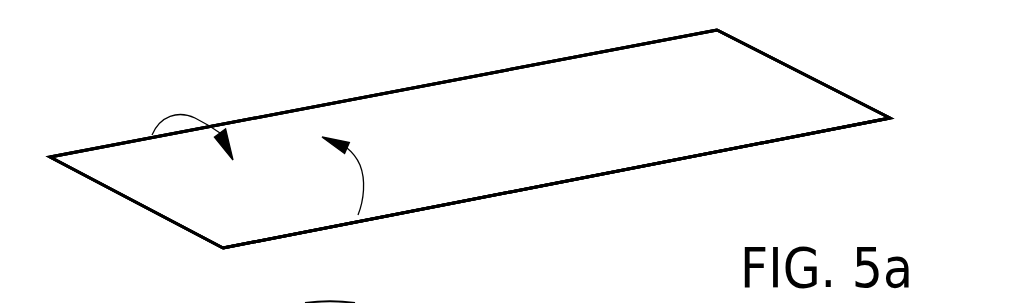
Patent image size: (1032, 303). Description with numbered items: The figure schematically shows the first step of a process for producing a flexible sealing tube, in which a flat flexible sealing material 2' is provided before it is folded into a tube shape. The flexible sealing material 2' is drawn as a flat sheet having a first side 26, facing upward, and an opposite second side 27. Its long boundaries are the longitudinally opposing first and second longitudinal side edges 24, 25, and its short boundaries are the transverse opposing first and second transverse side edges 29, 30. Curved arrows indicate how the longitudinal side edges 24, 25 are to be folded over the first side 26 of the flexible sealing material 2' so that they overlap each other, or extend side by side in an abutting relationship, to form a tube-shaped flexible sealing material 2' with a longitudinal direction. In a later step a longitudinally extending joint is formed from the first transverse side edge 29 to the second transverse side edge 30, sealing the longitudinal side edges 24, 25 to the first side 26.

The flexible sealing material 2' is at (470, 139).
The first longitudinal side edge 24 is at (435, 83).
The second longitudinal side edge 25 is at (570, 181).
The first side 26 is at (770, 98).
The second side 27 is at (813, 157).
The first transverse side edge 29 is at (98, 182).
The second transverse side edge 30 is at (835, 90).